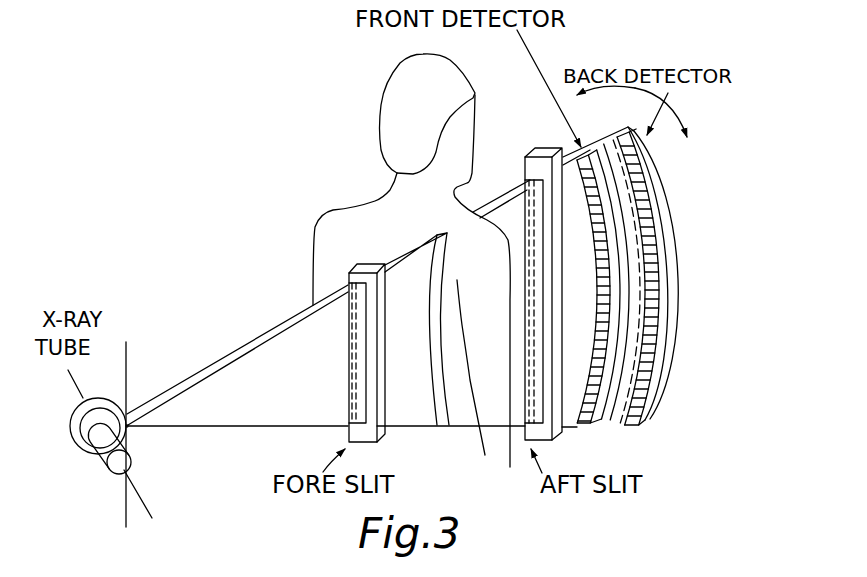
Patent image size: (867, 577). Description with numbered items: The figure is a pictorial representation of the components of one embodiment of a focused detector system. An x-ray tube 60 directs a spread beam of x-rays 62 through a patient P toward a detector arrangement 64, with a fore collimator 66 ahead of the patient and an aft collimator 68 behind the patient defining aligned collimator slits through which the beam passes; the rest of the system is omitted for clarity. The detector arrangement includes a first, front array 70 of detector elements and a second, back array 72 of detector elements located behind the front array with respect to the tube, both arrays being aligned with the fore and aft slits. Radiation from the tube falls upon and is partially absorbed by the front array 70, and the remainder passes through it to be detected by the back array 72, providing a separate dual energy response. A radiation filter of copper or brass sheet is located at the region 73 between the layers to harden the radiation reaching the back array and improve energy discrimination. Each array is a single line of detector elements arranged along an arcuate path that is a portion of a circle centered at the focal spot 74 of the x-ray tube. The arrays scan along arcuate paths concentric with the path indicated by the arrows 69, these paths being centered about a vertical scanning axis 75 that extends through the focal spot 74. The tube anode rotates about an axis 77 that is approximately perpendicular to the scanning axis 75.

The patient P is at (336, 200).
The x-ray tube 60 is at (88, 458).
The spread beam of x-rays 62 is at (241, 347).
The detector arrangement 64 is at (673, 283).
The fore collimator 66 is at (345, 274).
The aft collimator 68 is at (543, 148).
The arrows 69 is at (670, 117).
The first (front) array 70 is at (593, 421).
The second (back) array 72 is at (655, 371).
The radiation filter region 73 is at (628, 225).
The focal spot 74 is at (129, 428).
The vertical scanning axis 75 is at (128, 367).
The anode rotation axis 77 is at (92, 371).